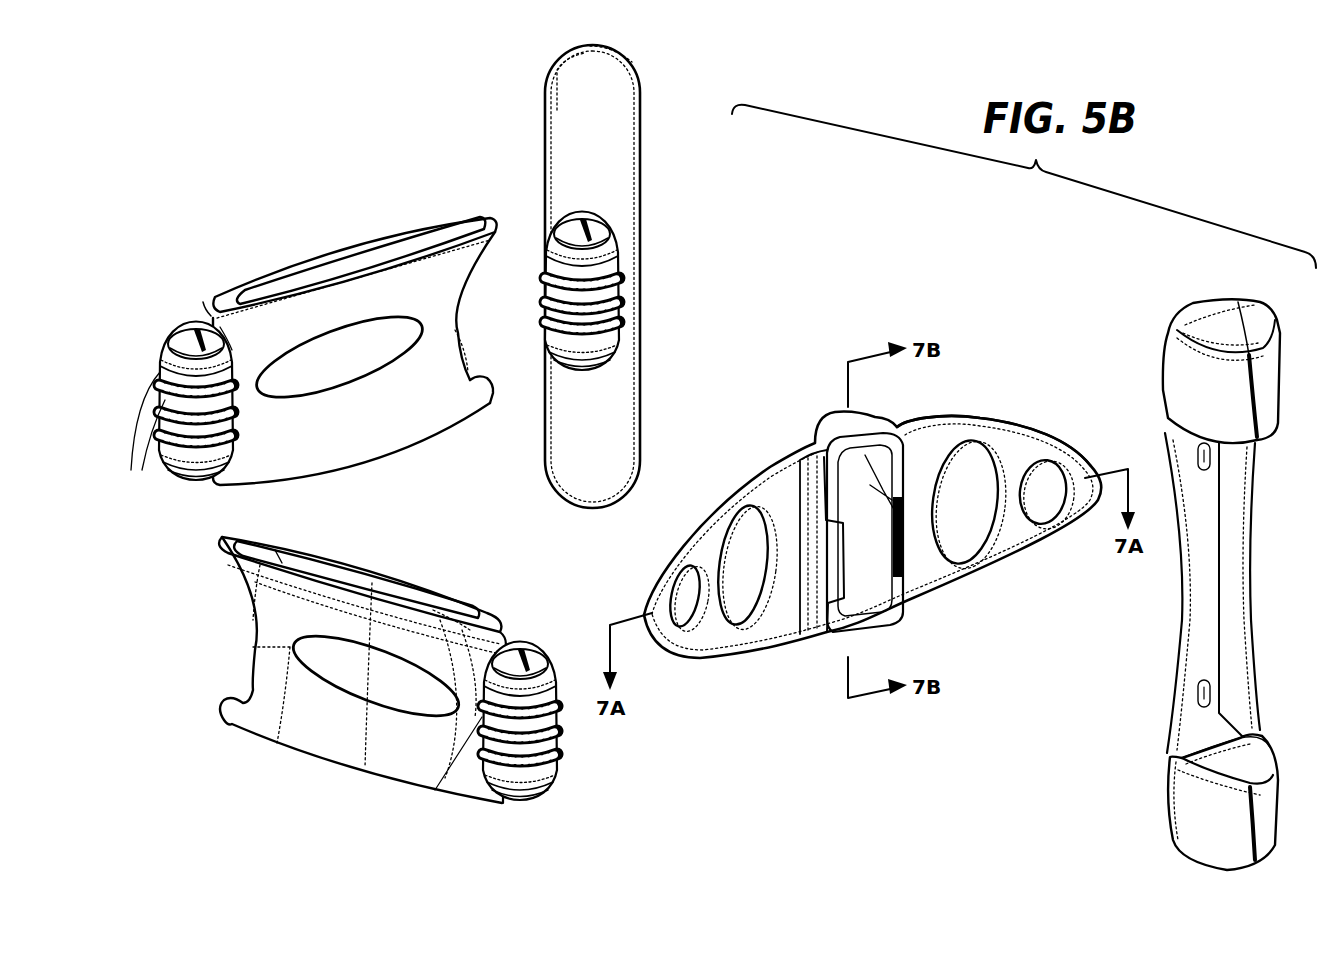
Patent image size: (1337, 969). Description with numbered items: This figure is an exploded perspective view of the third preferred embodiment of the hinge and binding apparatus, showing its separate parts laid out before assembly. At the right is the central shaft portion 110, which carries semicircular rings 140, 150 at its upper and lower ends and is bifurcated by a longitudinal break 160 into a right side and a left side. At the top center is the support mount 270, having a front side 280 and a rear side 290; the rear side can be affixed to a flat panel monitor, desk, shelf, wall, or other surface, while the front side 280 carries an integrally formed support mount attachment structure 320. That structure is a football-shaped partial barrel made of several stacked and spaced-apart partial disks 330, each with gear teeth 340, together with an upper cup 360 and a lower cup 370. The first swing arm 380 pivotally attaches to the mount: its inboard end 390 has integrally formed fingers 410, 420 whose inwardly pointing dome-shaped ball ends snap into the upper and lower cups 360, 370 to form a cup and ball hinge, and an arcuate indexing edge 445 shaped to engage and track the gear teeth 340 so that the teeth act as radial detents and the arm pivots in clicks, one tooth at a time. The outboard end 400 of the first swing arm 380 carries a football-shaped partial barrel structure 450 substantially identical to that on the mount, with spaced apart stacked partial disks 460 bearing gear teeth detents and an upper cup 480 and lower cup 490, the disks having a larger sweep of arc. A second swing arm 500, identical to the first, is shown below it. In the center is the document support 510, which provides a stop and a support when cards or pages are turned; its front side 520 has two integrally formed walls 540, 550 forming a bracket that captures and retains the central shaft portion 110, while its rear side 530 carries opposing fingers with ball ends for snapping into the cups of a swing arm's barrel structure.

The central shaft portion 110 is at (1186, 652).
The semicircular ring 140 is at (1179, 384).
The semicircular ring 150 is at (1181, 805).
The longitudinal break 160 is at (1215, 574).
The support mount 270 is at (620, 47).
The front side 280 is at (562, 92).
The rear side 290 is at (652, 400).
The support mount attachment structure 320 is at (596, 245).
The partial disks 330 is at (622, 327).
The gear teeth 340 is at (545, 327).
The upper cup 360 is at (585, 218).
The lower cup 370 is at (583, 372).
The first swing arm 380 is at (388, 238).
The inboard end 390 is at (460, 205).
The outboard end 400 is at (197, 308).
The finger 410 is at (495, 236).
The finger 420 is at (486, 405).
The arcuate indexing edge 445 is at (470, 322).
The football-shaped partial barrel structure 450 is at (160, 345).
The partial disks 460 is at (142, 445).
The upper cup 480 is at (203, 326).
The lower cup 490 is at (196, 480).
The second swing arm 500 is at (358, 570).
The document support 510 is at (942, 416).
The front side 520 is at (775, 628).
The rear side 530 is at (643, 568).
The wall 540 is at (838, 541).
The wall 550 is at (906, 548).